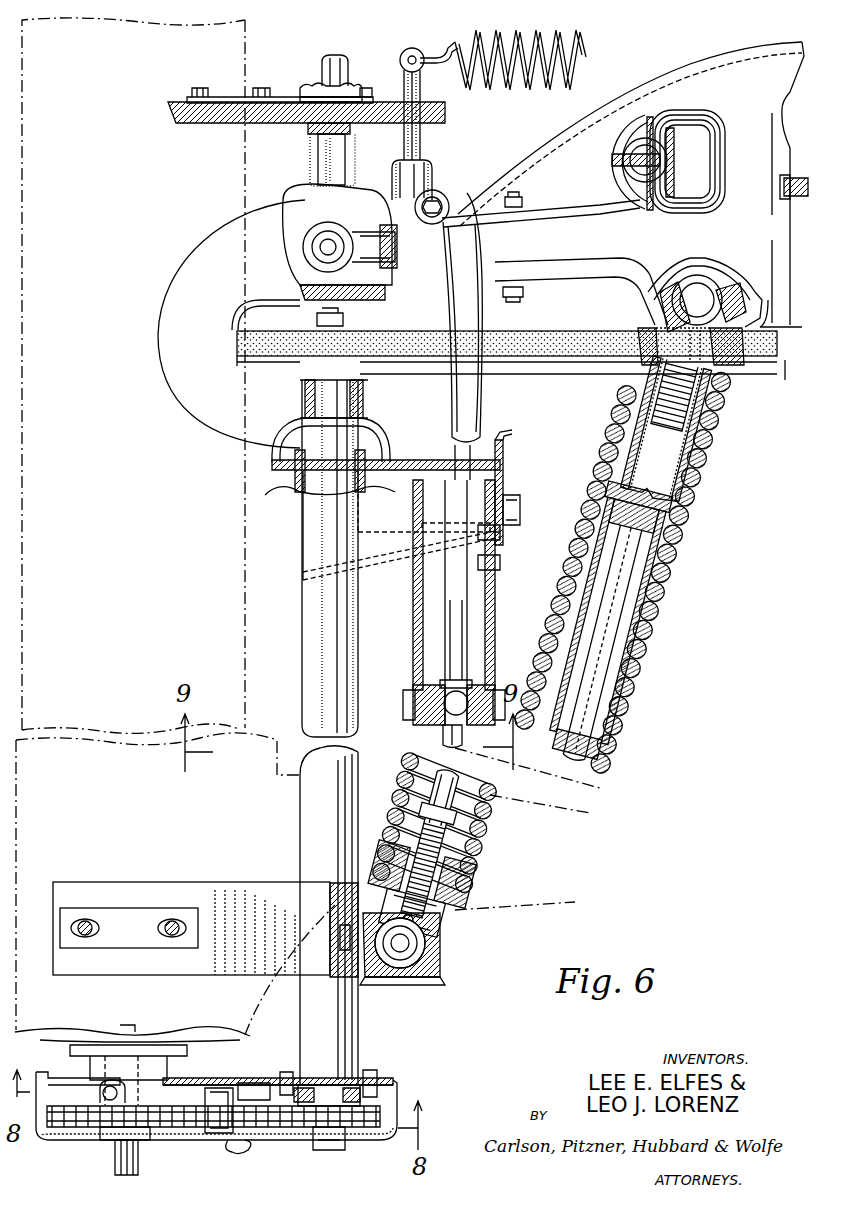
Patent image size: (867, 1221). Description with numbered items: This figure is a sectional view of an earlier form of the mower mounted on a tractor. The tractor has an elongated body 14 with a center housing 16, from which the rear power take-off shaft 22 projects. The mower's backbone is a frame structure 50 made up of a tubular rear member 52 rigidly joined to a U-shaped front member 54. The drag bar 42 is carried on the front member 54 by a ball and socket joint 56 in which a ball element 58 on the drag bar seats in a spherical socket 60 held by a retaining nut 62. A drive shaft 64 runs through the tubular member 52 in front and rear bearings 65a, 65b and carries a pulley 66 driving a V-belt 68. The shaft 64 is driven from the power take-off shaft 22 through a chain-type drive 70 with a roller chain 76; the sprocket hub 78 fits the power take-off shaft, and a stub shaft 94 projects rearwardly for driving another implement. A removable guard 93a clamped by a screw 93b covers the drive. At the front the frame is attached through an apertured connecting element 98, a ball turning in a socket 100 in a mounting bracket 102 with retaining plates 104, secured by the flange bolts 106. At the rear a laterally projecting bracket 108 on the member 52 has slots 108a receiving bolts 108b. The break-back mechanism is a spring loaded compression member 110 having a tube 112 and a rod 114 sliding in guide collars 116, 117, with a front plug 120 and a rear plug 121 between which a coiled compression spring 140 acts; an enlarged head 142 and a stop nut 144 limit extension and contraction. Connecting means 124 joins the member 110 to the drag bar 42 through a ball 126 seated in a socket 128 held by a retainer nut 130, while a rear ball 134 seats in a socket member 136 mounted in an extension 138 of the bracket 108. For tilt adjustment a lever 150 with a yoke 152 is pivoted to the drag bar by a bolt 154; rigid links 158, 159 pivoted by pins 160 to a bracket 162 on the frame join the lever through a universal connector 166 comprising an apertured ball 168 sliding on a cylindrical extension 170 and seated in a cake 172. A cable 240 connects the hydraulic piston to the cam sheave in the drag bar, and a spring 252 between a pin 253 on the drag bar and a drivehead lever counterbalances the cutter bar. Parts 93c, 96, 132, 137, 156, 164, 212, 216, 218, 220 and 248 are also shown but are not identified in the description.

The elongated body 14 is at (220, 113).
The center housing 16 is at (268, 985).
The rear power take-off shaft 22 is at (135, 1029).
The drag bar 42 is at (560, 210).
The frame structure 50 is at (306, 634).
The tubular rear member 52 is at (312, 752).
The U-shaped front member 54 is at (200, 410).
The ball and socket joint 56 is at (378, 264).
The ball element 58 is at (312, 300).
The spherical socket 60 is at (302, 247).
The retaining nut 62 is at (352, 275).
The drive shaft 64 is at (300, 490).
The front bearing 65a is at (358, 390).
The rear bearing 65b is at (378, 1095).
The pulley 66 is at (240, 306).
The V-belt 68 is at (250, 347).
The chain-type drive 70 is at (301, 1136).
The roller chain 76 is at (358, 1125).
The hub 78 is at (150, 1095).
The removable guard 93a is at (205, 1140).
The screw 93b is at (250, 1150).
The case cover 93c is at (258, 1080).
The stub shaft 94 is at (118, 1158).
The cap nut 96 is at (340, 58).
The apertured connecting element 98 is at (318, 88).
The socket 100 is at (345, 122).
The mounting bracket 102 is at (276, 98).
The retaining plates 104 is at (378, 108).
The bolts 106 is at (260, 88).
The laterally projecting bracket 108 is at (222, 896).
The slots 108a is at (172, 946).
The bolts 108b is at (172, 920).
The spring loaded compression member 110 is at (644, 694).
The tube 112 is at (655, 630).
The rod 114 is at (592, 703).
The guide collar 116 is at (572, 766).
The guide collar 117 is at (652, 566).
The front plug 120 is at (732, 373).
The rear plug 121 is at (462, 878).
The connecting means 124 is at (646, 339).
The ball 126 is at (710, 287).
The socket 128 is at (690, 272).
The retainer nut 130 is at (745, 300).
The pin 132 is at (444, 926).
The ball 134 is at (408, 953).
The socket member 136 is at (413, 980).
The socket housing 137 is at (438, 940).
The bracket extension 138 is at (340, 930).
The coiled compression spring 140 is at (660, 543).
The enlarged head 142 is at (645, 537).
The stop nut 144 is at (486, 811).
The lever 150 is at (480, 415).
The yoke 152 is at (486, 206).
The bolt 154 is at (447, 196).
The block 156 is at (430, 168).
The rigid link 158 is at (500, 614).
The rigid link 159 is at (415, 612).
The pins 160 is at (522, 510).
The bracket 162 is at (395, 462).
The flange 164 is at (506, 478).
The universal connector 166 is at (435, 672).
The apertured ball 168 is at (442, 728).
The cylindrical extension 170 is at (468, 640).
The cake 172 is at (413, 690).
The wall 212 is at (655, 185).
The coil 216 is at (722, 120).
The core 218 is at (690, 130).
The housing wall 220 is at (628, 135).
The cable 240 is at (620, 159).
The bolt 248 is at (782, 184).
The spring 252 is at (570, 42).
The pin 253 is at (420, 108).